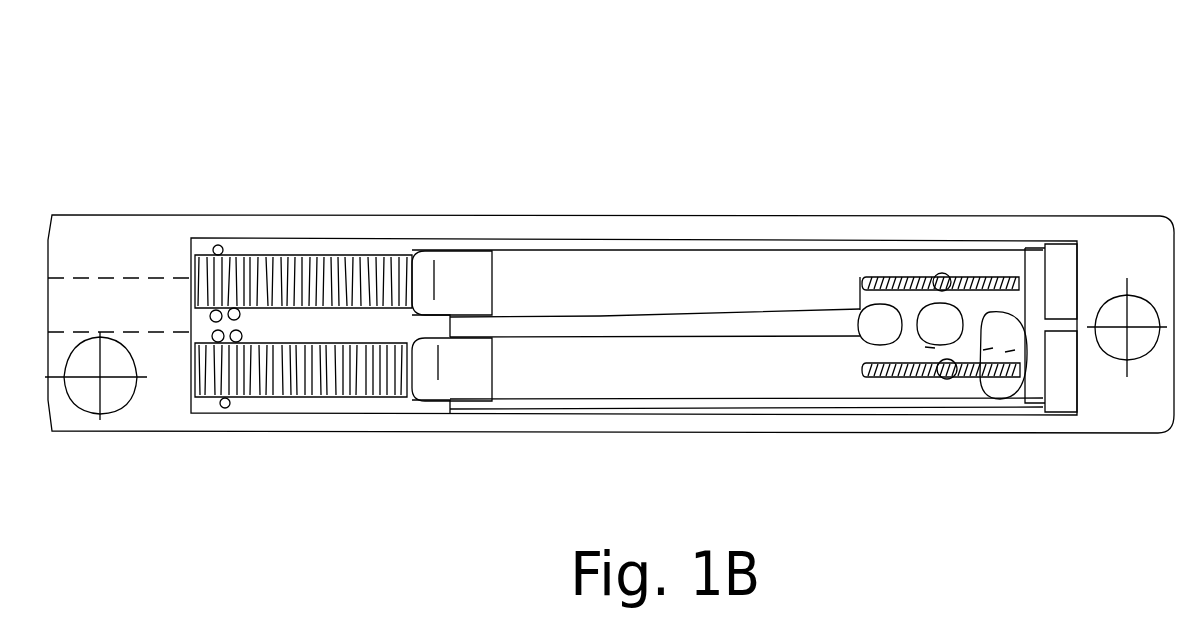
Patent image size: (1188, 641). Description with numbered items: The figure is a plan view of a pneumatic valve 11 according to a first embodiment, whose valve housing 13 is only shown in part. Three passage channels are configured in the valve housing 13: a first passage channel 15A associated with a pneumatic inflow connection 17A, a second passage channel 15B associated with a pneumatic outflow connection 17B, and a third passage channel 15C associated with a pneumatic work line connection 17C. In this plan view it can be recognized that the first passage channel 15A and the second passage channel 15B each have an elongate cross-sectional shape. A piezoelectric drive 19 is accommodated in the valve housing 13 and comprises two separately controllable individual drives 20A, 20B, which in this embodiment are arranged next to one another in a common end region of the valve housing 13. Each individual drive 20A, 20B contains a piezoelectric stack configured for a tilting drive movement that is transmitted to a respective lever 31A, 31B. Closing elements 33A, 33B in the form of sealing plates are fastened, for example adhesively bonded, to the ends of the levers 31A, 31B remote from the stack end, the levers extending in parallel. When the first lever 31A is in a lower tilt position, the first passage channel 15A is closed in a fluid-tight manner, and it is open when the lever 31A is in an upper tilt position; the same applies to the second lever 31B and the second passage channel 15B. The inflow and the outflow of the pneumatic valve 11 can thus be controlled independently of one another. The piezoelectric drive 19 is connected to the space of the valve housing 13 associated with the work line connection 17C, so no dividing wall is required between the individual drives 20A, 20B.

The pneumatic valve 11 is at (108, 132).
The valve housing 13 is at (157, 397).
The piezoelectric drive 19 is at (212, 197).
The individual drive 20A is at (318, 255).
The individual drive 20B is at (330, 397).
The first lever 31A is at (460, 260).
The second lever 31B is at (473, 375).
The first passage channel 15A is at (893, 277).
The second passage channel 15B is at (990, 378).
The third passage channel 15C is at (965, 357).
The pneumatic inflow connection 17A is at (860, 310).
The pneumatic outflow connection 17B is at (968, 357).
The pneumatic work line connection 17C is at (927, 313).
The closing element 33A is at (1020, 243).
The closing element 33B is at (945, 405).